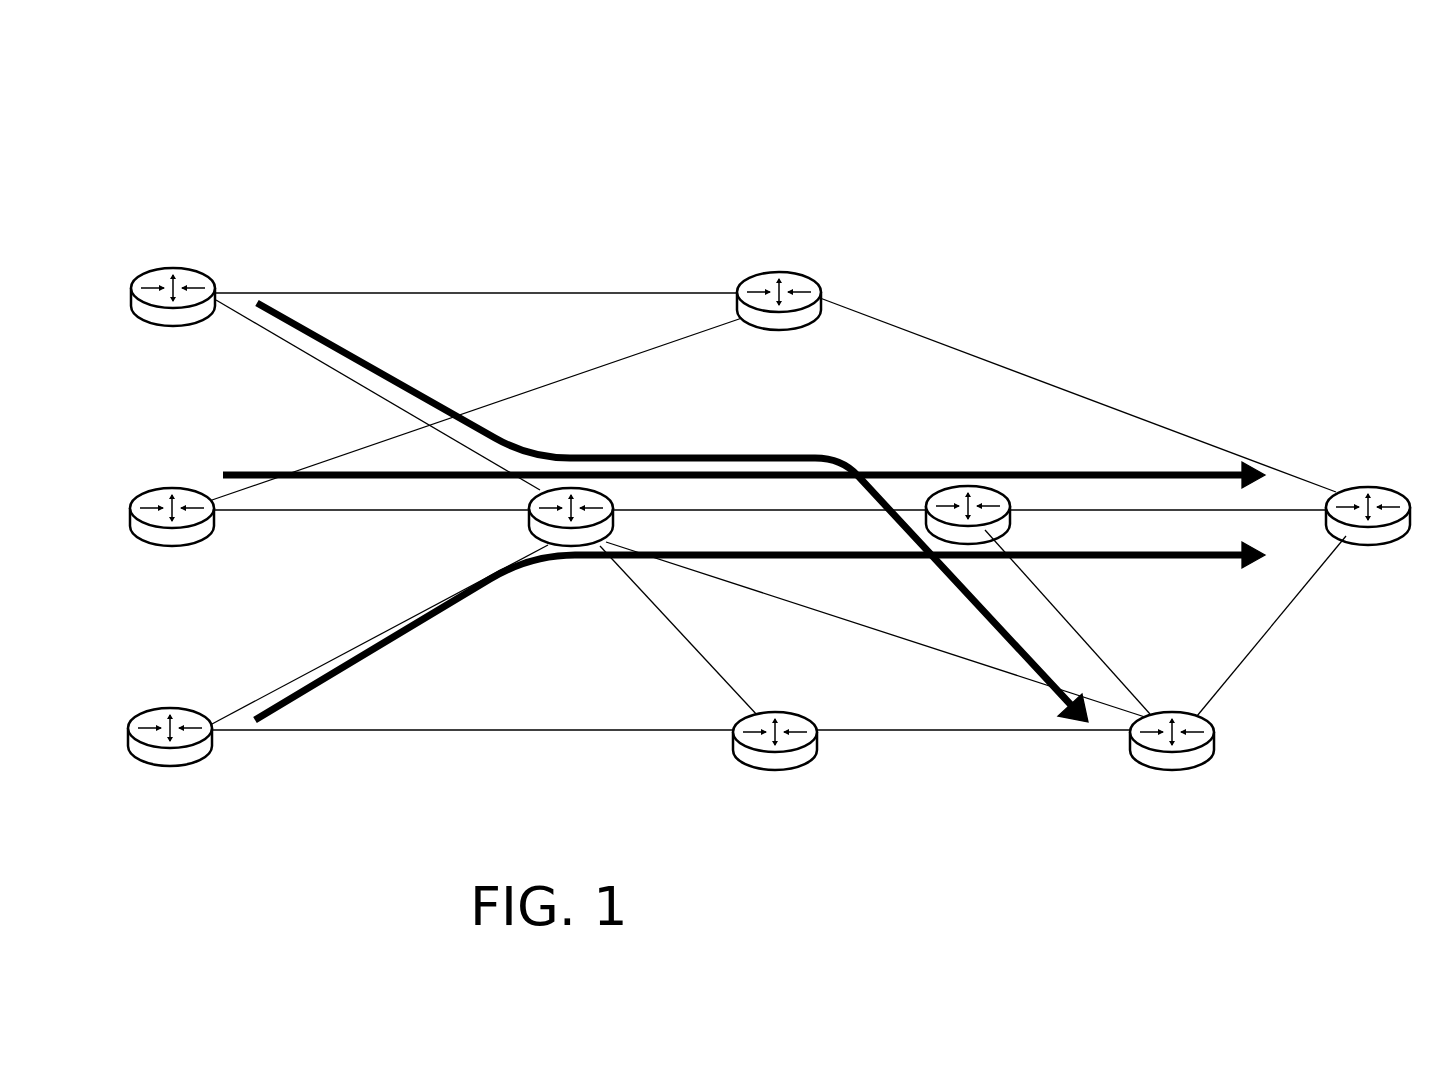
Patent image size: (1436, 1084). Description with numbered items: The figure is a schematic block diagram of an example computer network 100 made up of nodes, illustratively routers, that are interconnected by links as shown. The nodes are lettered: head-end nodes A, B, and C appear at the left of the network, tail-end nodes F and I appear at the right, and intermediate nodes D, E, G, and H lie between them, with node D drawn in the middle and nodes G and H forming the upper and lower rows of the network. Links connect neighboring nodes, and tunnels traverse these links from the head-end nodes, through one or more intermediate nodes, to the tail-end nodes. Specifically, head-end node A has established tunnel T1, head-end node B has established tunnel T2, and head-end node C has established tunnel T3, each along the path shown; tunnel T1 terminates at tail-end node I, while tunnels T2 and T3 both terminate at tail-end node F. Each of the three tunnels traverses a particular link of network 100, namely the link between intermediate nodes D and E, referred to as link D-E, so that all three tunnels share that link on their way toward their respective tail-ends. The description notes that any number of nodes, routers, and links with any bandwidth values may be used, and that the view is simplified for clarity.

The computer network 100 is at (202, 140).
The node A is at (160, 270).
The node B is at (160, 490).
The node C is at (160, 708).
The node D is at (528, 523).
The node E is at (1010, 522).
The node F is at (1383, 540).
The node G is at (773, 270).
The node H is at (788, 768).
The node I is at (1185, 768).
The tunnel T1 is at (343, 350).
The tunnel T2 is at (243, 473).
The tunnel T3 is at (358, 668).